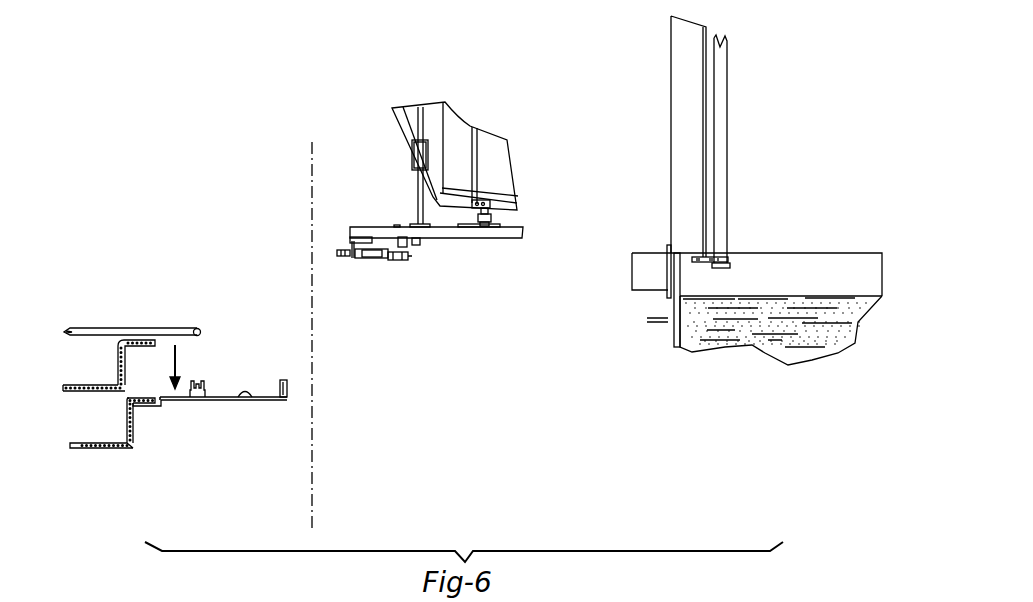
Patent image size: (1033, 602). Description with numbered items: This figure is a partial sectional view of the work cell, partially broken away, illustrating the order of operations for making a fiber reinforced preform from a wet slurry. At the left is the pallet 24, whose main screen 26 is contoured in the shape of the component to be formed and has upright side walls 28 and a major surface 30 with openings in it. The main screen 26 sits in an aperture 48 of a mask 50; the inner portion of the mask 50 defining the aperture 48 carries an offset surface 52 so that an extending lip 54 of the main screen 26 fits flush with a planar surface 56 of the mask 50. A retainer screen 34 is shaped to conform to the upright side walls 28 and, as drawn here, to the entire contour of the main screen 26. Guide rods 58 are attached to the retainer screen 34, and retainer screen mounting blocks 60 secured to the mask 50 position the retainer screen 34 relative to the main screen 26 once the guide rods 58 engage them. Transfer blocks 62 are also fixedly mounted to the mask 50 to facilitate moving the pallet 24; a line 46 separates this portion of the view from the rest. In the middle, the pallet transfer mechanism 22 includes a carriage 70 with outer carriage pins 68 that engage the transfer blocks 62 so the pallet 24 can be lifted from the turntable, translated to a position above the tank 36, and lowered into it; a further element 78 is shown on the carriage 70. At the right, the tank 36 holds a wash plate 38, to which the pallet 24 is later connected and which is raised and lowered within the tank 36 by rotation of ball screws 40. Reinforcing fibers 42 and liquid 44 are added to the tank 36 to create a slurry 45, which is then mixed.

The pallet transfer mechanism 22 is at (374, 142).
The pallet 24 is at (223, 466).
The main screen 26 is at (133, 449).
The upright side walls 28 is at (127, 430).
The major surface 30 is at (70, 443).
The retainer screen 34 is at (118, 386).
The tank 36 is at (668, 337).
The wash plate 38 is at (687, 257).
The ball screws 40 is at (720, 118).
The reinforcing fibers 42 is at (858, 322).
The liquid 44 is at (832, 337).
The slurry 45 is at (788, 337).
The center line 46 is at (312, 193).
The aperture 48 is at (135, 409).
The mask 50 is at (214, 399).
The offset surface 52 is at (155, 398).
The extending lip 54 is at (137, 389).
The planar surface 56 is at (244, 392).
The guide rods 58 is at (198, 330).
The retainer screen mounting blocks 60 is at (205, 392).
The transfer blocks 62 is at (284, 381).
The outer carriage pins 68 is at (348, 258).
The carriage 70 is at (473, 238).
The bracket 78 is at (405, 259).